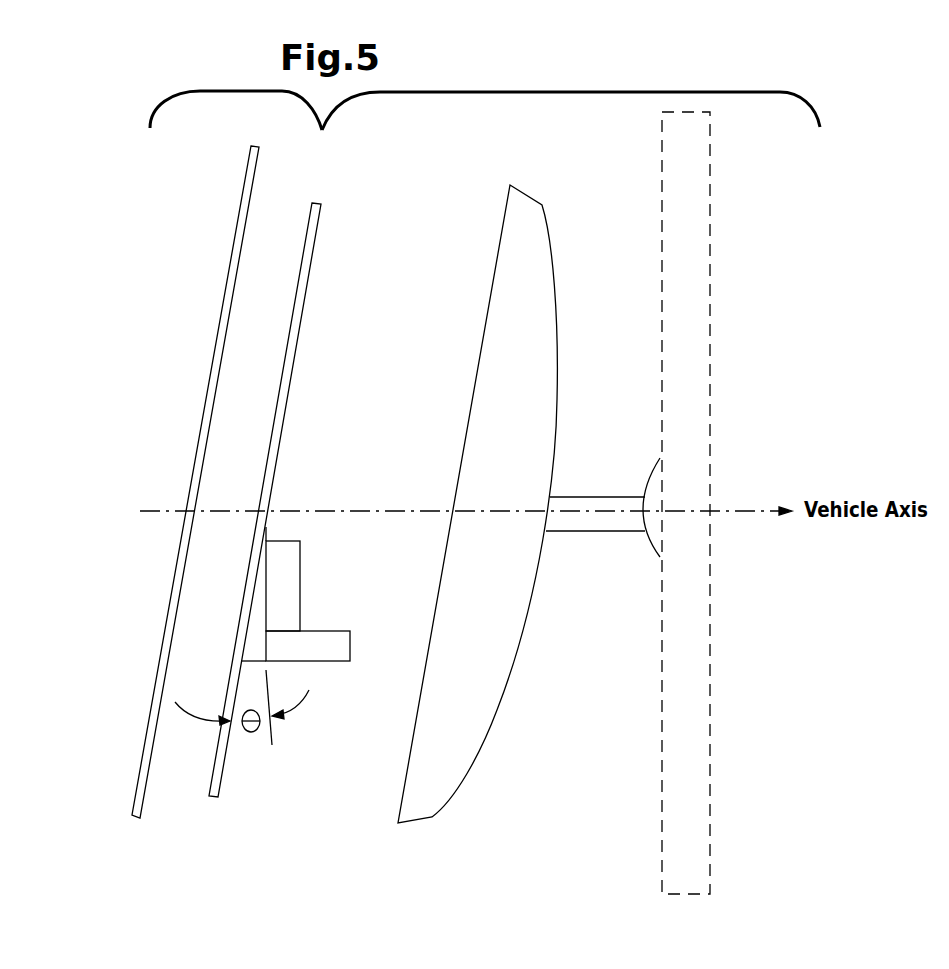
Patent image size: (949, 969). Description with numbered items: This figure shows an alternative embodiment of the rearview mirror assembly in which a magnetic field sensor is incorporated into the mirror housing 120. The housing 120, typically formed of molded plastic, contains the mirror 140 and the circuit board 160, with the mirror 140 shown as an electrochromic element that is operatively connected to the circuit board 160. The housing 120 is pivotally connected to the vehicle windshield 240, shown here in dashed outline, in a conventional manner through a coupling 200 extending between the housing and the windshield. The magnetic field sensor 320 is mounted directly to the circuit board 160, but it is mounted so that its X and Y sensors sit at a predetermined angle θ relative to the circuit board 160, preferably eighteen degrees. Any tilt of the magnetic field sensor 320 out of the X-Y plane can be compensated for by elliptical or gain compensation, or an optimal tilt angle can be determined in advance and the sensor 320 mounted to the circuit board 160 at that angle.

The housing 120 is at (445, 782).
The mirror 140 is at (136, 812).
The circuit board 160 is at (215, 792).
The feed / coupling 200 is at (604, 519).
The vehicle windshield 240 is at (692, 843).
The magnetic field sensor 320 is at (300, 648).